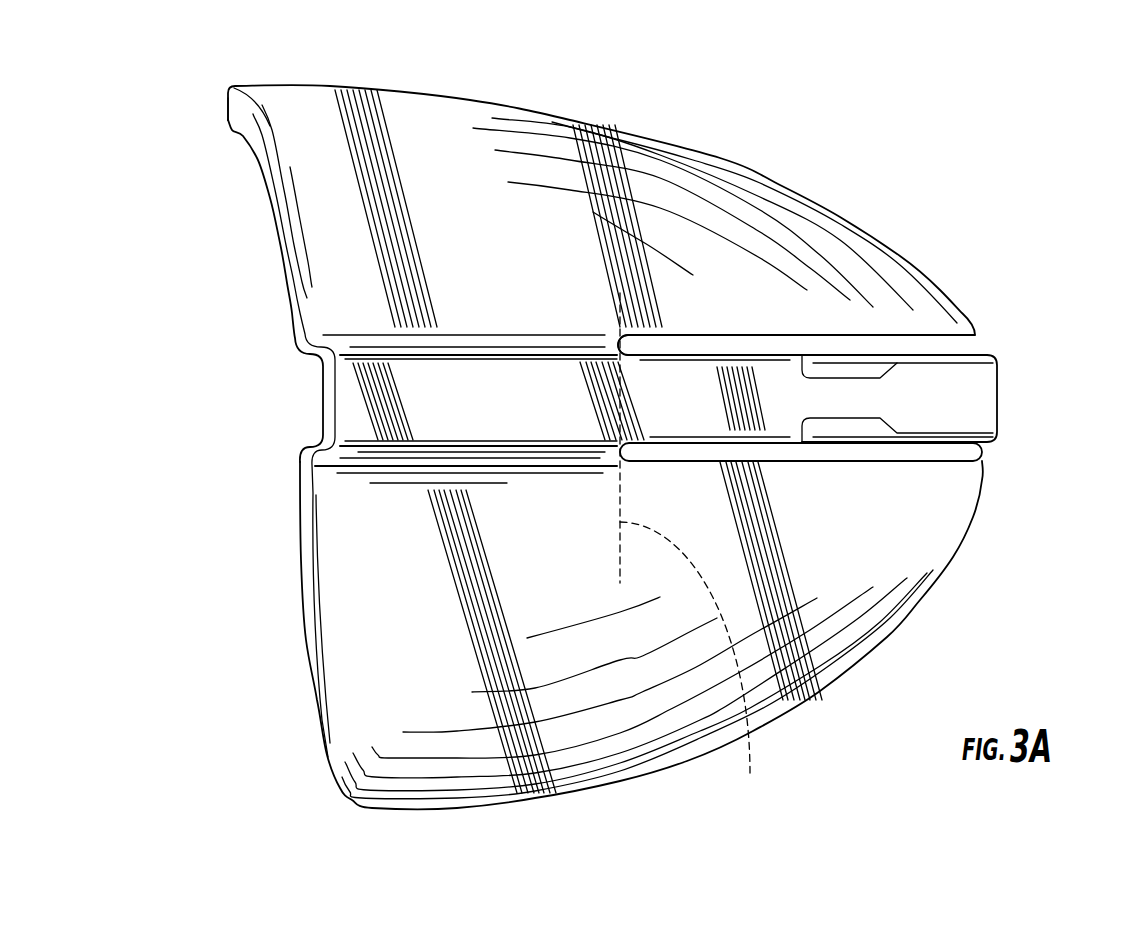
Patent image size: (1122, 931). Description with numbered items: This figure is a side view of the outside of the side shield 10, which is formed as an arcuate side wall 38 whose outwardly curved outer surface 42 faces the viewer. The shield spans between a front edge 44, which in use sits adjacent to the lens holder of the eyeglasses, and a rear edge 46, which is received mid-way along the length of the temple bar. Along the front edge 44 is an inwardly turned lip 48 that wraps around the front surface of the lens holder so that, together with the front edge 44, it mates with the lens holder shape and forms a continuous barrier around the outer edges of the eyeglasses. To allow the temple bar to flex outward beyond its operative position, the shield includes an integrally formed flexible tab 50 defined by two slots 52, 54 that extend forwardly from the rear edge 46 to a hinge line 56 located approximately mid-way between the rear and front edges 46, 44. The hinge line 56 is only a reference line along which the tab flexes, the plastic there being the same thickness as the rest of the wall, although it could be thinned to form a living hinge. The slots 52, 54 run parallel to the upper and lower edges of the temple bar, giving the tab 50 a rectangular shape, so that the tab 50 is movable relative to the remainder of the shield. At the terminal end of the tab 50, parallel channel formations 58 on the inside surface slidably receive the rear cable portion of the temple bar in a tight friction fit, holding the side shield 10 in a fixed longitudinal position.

The side shield 10 is at (805, 197).
The arcuate side wall 38 is at (682, 262).
The outer surface 42 is at (477, 222).
The front edge 44 is at (267, 120).
The rear edge 46 is at (870, 637).
The inwardly turned lip 48 is at (243, 108).
The flexible tab 50 is at (908, 390).
The slot 52 is at (888, 350).
The slot 54 is at (950, 453).
The hinge line 56 is at (692, 555).
The channel formations 58 is at (950, 433).